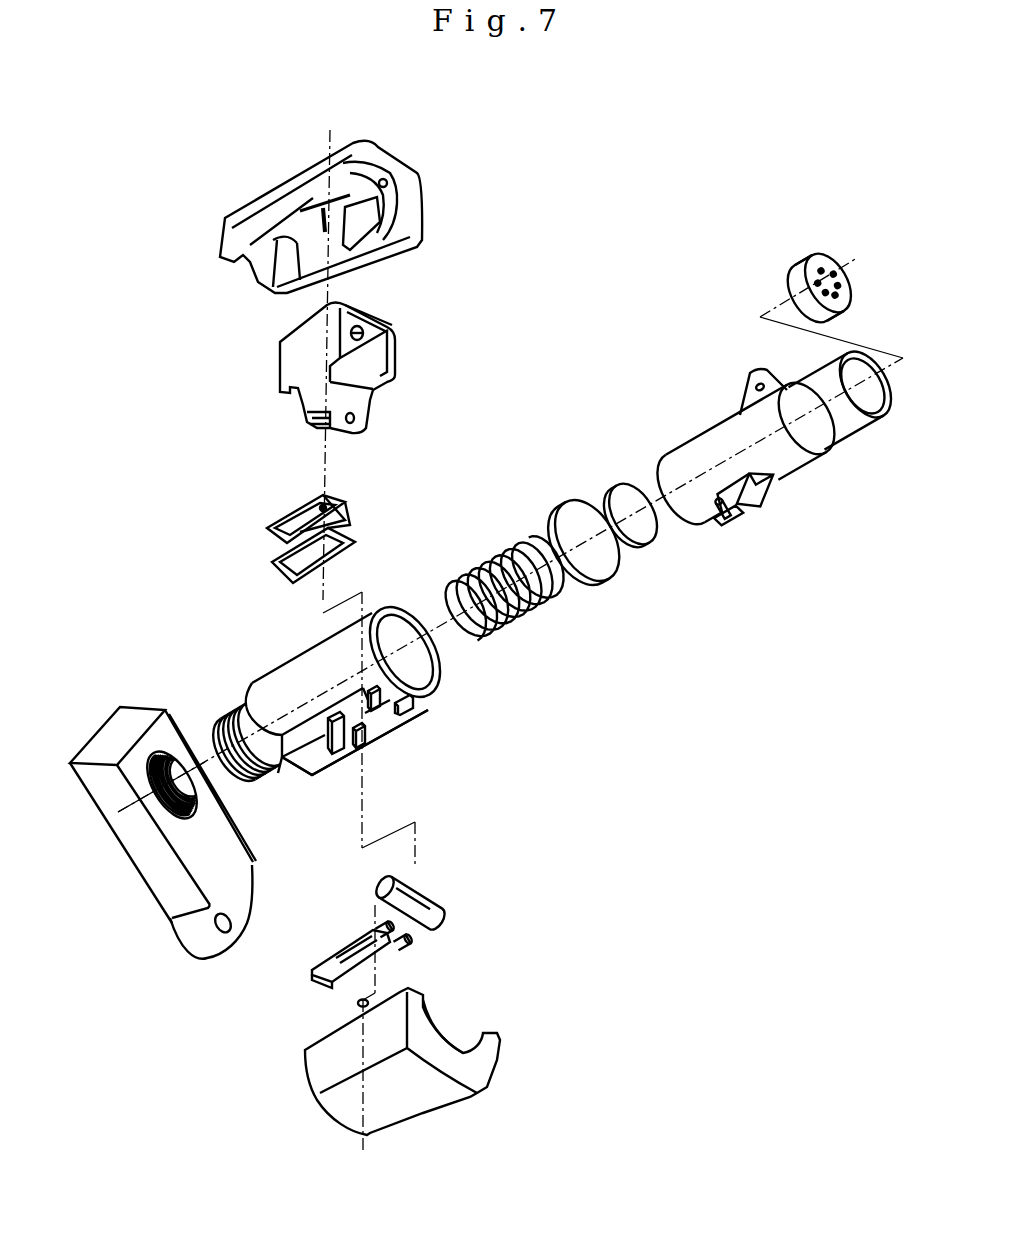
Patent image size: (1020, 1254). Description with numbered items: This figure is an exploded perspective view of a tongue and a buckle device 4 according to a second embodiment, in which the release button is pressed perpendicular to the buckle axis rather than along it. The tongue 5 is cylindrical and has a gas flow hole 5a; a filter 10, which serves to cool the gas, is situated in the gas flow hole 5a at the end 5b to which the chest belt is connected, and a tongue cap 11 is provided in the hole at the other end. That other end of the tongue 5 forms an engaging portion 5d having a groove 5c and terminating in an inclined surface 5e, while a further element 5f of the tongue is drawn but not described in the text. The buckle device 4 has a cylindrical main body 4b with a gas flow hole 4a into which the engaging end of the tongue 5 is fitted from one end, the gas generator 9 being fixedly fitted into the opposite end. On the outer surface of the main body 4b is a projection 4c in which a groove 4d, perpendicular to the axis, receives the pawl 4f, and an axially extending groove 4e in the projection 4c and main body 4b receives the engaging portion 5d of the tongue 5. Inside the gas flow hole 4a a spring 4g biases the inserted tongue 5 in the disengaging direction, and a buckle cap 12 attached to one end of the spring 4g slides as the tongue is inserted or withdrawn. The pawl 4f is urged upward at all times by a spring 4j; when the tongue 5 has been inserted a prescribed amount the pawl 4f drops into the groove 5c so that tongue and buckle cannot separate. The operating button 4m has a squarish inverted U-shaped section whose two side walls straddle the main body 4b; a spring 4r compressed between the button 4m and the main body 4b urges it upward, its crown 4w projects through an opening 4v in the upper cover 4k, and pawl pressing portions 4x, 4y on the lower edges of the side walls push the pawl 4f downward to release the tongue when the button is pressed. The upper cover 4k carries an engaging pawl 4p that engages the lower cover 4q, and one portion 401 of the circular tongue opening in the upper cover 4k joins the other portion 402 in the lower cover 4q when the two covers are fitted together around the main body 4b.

The buckle device 4 is at (222, 606).
The gas flow hole 4a is at (430, 663).
The buckle main body 4b is at (260, 692).
The projection 4c is at (313, 768).
The groove 4d is at (328, 718).
The axially extending groove 4e is at (402, 712).
The pawl 4f is at (450, 912).
The spring 4g is at (465, 563).
The spring 4j is at (347, 943).
The upper cover 4k is at (230, 225).
The operating button 4m is at (303, 358).
The engaging pawl 4p is at (358, 1003).
The lower cover 4q is at (340, 1107).
The spring 4r is at (263, 530).
The opening 4v is at (316, 190).
The crown 4w is at (380, 325).
The pawl pressing portion 4x is at (303, 420).
The pawl pressing portion 4y is at (373, 430).
The portion of opening 401 is at (385, 183).
The portion of opening 402 is at (468, 1045).
The tongue 5 is at (733, 427).
The gas flow hole 5a is at (852, 292).
The end of tongue 5b is at (837, 433).
The groove 5c is at (727, 513).
The engaging portion 5d is at (750, 507).
The inclined surface 5e is at (720, 520).
The lug 5f is at (756, 375).
The gas generator 9 is at (160, 898).
The filter 10 is at (798, 260).
The tongue cap 11 is at (627, 493).
The buckle cap 12 is at (573, 512).